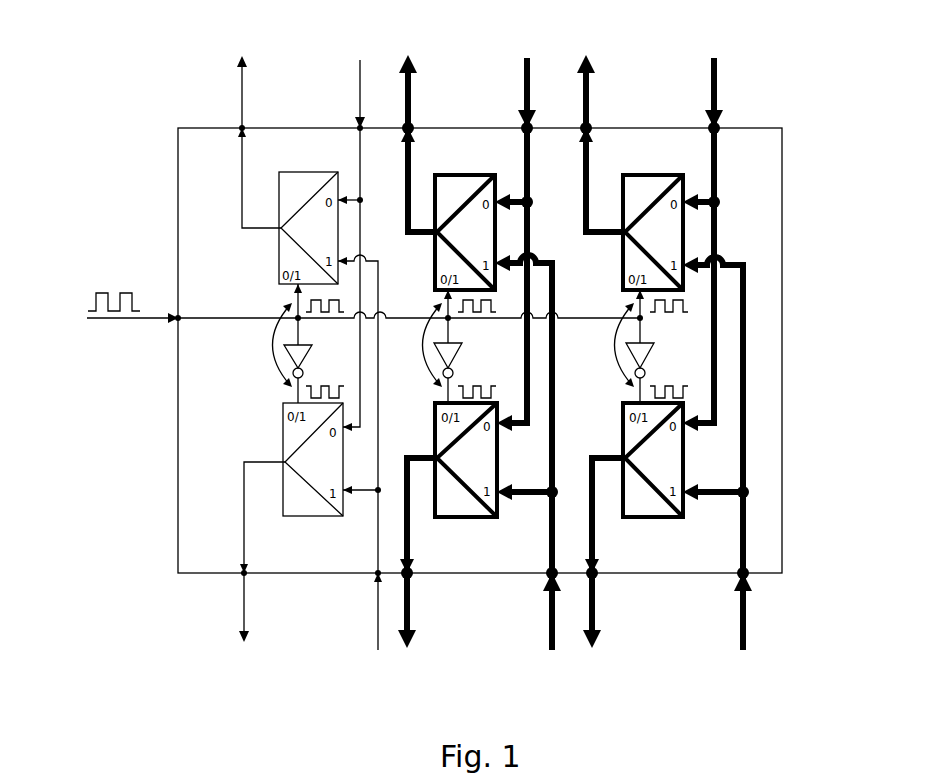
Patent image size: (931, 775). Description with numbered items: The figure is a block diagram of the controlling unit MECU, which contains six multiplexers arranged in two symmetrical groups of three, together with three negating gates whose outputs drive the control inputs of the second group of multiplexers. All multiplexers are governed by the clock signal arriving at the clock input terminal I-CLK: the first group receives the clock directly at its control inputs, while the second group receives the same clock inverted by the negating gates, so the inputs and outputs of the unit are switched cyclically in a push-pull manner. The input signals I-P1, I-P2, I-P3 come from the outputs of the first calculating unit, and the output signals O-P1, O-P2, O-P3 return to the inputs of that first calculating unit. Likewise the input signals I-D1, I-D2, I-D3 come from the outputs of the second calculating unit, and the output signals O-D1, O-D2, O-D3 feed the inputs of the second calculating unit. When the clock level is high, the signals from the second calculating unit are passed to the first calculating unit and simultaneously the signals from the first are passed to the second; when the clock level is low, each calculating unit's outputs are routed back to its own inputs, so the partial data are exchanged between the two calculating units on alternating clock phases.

The controlling unit MECU is at (220, 143).
The clock input terminal I-CLK is at (178, 318).
The first output signal to first calculating unit O-P1 is at (265, 142).
The first input signal from first calculating unit I-P1 is at (341, 245).
The first output signal to second calculating unit O-D1 is at (268, 552).
The first input signal from second calculating unit I-D1 is at (354, 452).
The second output signal to first calculating unit O-P2 is at (429, 143).
The second input signal from first calculating unit I-P2 is at (510, 244).
The second output signal to second calculating unit O-D2 is at (431, 553).
The second input signal from second calculating unit I-D2 is at (528, 452).
The third output signal to first calculating unit O-P3 is at (607, 143).
The third input signal from first calculating unit I-P3 is at (695, 244).
The third output signal to second calculating unit O-D3 is at (615, 553).
The third input signal from second calculating unit I-D3 is at (717, 453).